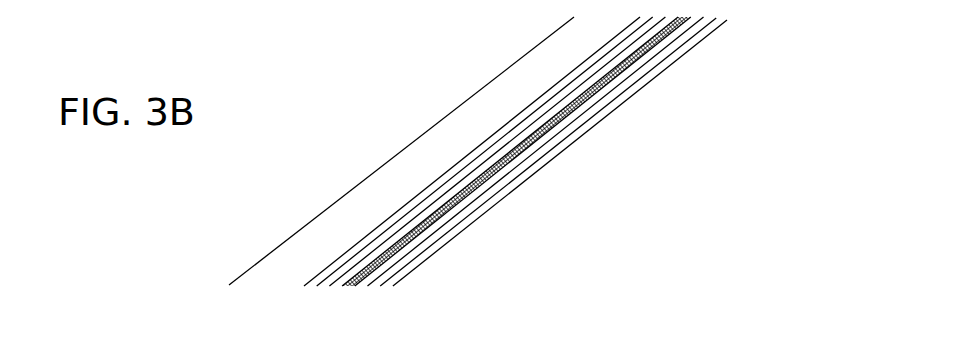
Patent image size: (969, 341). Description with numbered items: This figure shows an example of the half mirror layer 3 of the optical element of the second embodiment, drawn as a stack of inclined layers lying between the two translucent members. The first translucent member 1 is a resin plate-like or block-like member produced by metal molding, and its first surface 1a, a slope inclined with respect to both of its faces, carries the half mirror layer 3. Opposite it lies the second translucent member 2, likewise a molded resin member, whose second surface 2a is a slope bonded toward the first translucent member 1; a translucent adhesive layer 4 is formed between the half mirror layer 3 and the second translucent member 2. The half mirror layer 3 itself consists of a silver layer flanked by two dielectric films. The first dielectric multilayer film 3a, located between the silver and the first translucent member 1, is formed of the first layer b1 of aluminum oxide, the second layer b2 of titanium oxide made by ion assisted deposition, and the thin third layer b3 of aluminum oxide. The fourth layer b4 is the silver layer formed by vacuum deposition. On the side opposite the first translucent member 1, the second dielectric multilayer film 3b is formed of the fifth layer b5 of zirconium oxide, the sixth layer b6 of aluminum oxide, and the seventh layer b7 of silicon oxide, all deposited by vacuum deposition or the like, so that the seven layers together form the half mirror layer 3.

The first translucent member 1 is at (558, 169).
The first surface 1a is at (727, 22).
The second translucent member 2 is at (401, 151).
The second surface 2a is at (487, 86).
The half mirror layer 3 is at (594, 173).
The first dielectric multilayer film 3a is at (628, 147).
The second dielectric multilayer film 3b is at (491, 157).
The translucent adhesive layer 4 is at (536, 59).
The first layer b1 is at (618, 147).
The second layer b2 is at (637, 79).
The third layer b3 is at (595, 104).
The fourth layer b4 is at (553, 123).
The fifth layer b5 is at (485, 167).
The sixth layer b6 is at (458, 181).
The seventh layer b7 is at (413, 206).